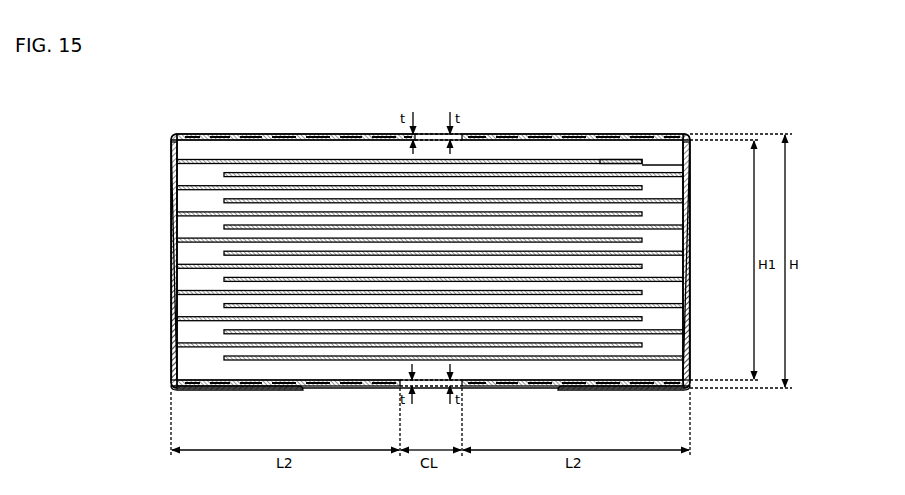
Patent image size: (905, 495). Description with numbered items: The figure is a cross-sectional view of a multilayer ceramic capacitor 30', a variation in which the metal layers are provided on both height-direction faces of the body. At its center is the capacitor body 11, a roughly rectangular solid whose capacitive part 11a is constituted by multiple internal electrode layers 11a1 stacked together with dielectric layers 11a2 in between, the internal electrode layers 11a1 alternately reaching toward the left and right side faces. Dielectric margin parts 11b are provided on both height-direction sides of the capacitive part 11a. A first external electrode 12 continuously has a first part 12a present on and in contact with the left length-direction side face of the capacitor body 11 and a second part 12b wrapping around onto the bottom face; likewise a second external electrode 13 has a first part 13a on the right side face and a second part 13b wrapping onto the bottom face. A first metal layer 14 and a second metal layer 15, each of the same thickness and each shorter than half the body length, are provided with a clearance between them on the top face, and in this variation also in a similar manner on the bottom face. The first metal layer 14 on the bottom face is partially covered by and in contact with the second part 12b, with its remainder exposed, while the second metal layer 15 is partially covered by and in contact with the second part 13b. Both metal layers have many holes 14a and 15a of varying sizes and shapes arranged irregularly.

The multilayer ceramic capacitor 30' is at (426, 233).
The capacitor body 11 is at (427, 134).
The capacitive part 11a is at (171, 160).
The internal electrode layer 11a1 is at (642, 158).
The dielectric layer 11a2 is at (641, 167).
The dielectric margin part 11b is at (171, 141).
The first external electrode 12 is at (171, 225).
The first part 12a is at (171, 312).
The second part 12b is at (240, 392).
The second external electrode 13 is at (690, 226).
The first part 13a is at (690, 306).
The second part 13b is at (626, 392).
The first metal layer 14 is at (362, 134).
The holes 14a is at (317, 134).
The second metal layer 15 is at (499, 134).
The holes 15a is at (547, 134).